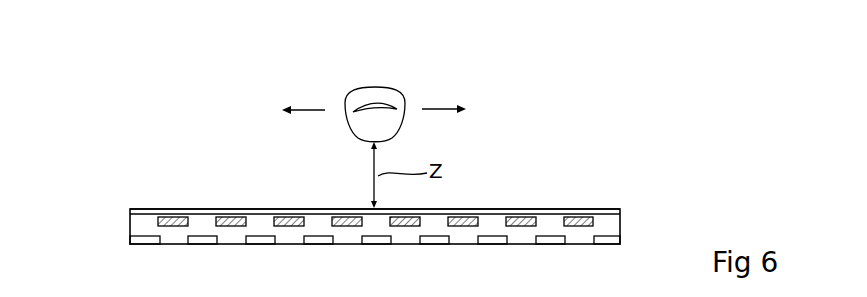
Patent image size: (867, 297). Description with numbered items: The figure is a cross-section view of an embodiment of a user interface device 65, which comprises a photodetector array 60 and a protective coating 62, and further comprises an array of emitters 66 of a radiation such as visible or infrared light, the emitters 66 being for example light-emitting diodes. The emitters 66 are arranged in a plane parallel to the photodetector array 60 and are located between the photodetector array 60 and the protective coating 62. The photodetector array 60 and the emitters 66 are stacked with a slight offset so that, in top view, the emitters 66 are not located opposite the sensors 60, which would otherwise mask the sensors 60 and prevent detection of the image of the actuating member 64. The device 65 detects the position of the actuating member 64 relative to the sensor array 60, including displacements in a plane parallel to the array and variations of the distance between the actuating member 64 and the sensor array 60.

The photodetector array 60 is at (203, 245).
The protective coating 62 is at (603, 210).
The actuating member 64 is at (401, 106).
The user interface device 65 is at (122, 198).
The array of emitters 66 is at (173, 215).